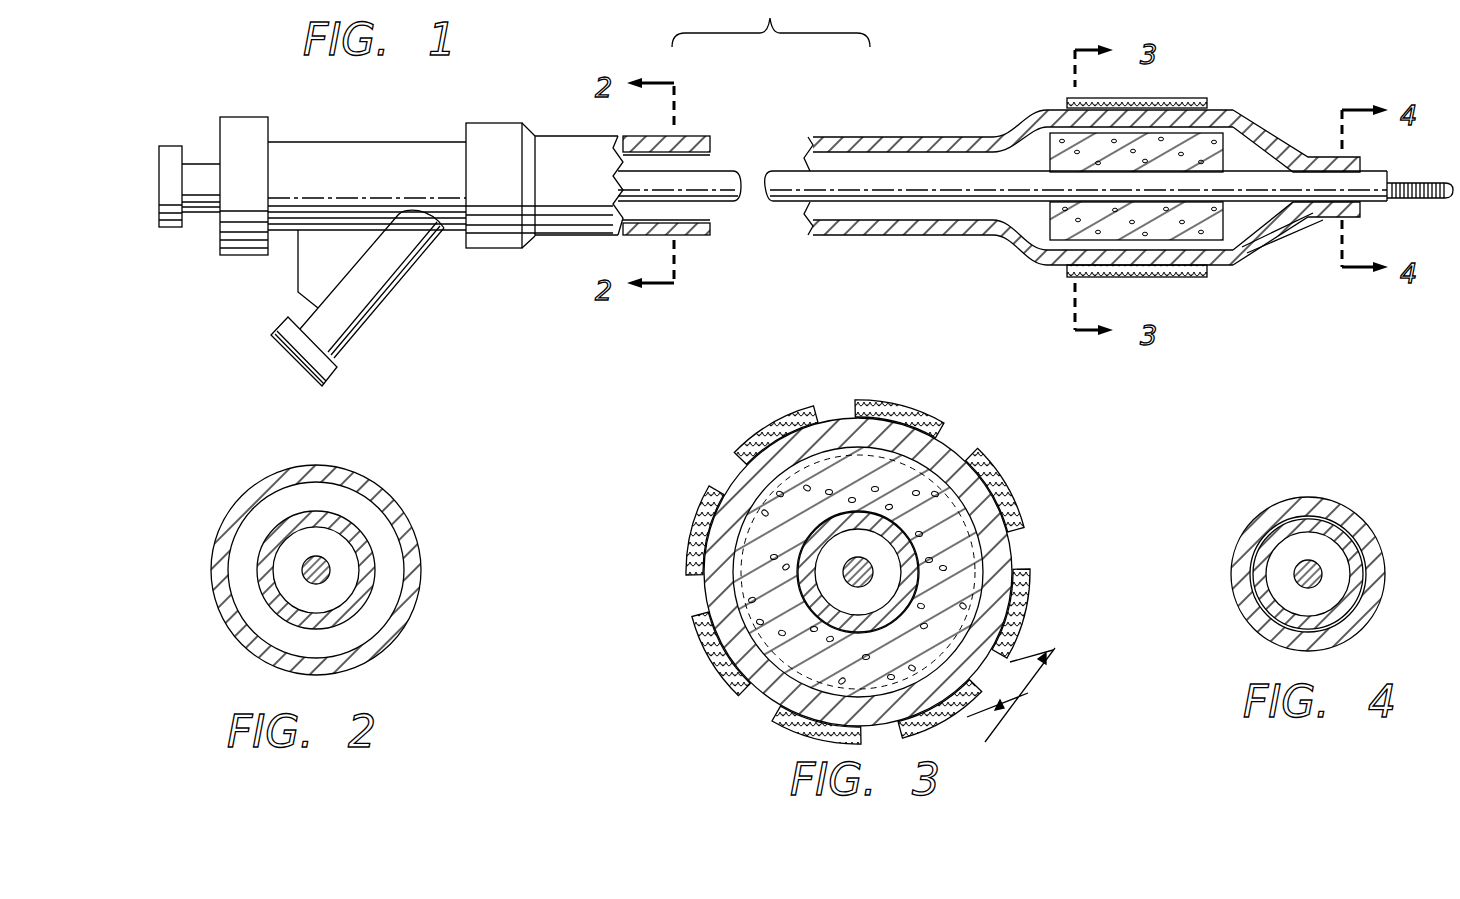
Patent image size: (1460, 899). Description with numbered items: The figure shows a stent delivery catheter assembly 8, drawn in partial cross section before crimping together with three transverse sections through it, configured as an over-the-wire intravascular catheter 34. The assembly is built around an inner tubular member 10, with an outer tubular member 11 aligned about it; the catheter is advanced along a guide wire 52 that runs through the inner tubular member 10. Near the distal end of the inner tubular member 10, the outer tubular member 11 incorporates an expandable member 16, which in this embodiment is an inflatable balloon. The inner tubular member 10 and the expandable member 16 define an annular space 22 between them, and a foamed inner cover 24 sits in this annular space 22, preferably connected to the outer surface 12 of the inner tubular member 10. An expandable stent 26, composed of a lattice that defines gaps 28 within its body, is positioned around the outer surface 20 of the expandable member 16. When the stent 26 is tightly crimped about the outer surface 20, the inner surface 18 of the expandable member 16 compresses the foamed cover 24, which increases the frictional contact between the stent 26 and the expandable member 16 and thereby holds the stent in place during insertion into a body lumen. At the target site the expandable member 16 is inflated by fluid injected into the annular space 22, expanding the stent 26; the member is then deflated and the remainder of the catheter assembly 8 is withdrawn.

In FIG. 1, the catheter assembly 8 is at (710, 252).
In FIG. 1, the inner tubular member 10 is at (718, 182).
In FIG. 3, the inner tubular member 10 is at (805, 522).
In FIG. 4, the inner tubular member 10 is at (1347, 602).
In FIG. 1, the outer tubular member 11 is at (868, 126).
In FIG. 2, the outer tubular member 11 is at (238, 632).
In FIG. 2, the outer surface 12 is at (327, 513).
In FIG. 3, the outer surface 12 is at (800, 610).
In FIG. 1, the expandable member 16 is at (1040, 253).
In FIG. 4, the expandable member 16 is at (1278, 515).
In FIG. 3, the inner surface 18 is at (945, 508).
In FIG. 3, the outer surface 20 is at (1015, 552).
In FIG. 1, the annular space 22 is at (1027, 148).
In FIG. 2, the annular space 22 is at (373, 613).
In FIG. 3, the annular space 22 is at (790, 686).
In FIG. 1, the foamed inner cover 24 is at (1257, 253).
In FIG. 3, the foamed inner cover 24 is at (933, 664).
In FIG. 1, the expandable stent 26 is at (1177, 278).
In FIG. 3, the expandable stent 26 is at (1030, 592).
In FIG. 3, the gaps 28 is at (1025, 693).
In FIG. 1, the over-the-wire intravascular catheter 34 is at (393, 287).
In FIG. 1, the guide wire 52 is at (1427, 197).
In FIG. 2, the guide wire 52 is at (303, 563).
In FIG. 3, the guide wire 52 is at (858, 558).
In FIG. 4, the guide wire 52 is at (1310, 568).